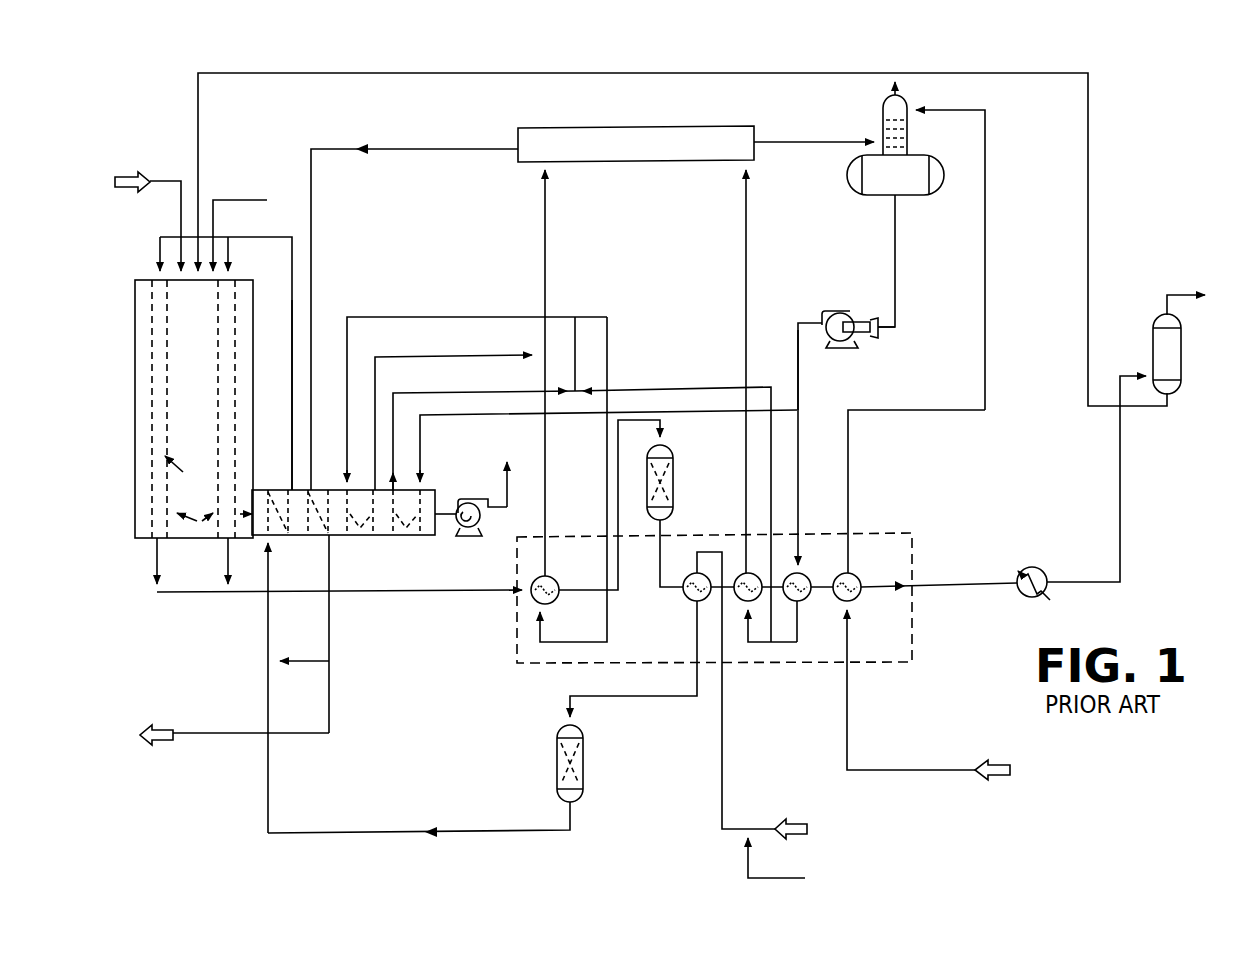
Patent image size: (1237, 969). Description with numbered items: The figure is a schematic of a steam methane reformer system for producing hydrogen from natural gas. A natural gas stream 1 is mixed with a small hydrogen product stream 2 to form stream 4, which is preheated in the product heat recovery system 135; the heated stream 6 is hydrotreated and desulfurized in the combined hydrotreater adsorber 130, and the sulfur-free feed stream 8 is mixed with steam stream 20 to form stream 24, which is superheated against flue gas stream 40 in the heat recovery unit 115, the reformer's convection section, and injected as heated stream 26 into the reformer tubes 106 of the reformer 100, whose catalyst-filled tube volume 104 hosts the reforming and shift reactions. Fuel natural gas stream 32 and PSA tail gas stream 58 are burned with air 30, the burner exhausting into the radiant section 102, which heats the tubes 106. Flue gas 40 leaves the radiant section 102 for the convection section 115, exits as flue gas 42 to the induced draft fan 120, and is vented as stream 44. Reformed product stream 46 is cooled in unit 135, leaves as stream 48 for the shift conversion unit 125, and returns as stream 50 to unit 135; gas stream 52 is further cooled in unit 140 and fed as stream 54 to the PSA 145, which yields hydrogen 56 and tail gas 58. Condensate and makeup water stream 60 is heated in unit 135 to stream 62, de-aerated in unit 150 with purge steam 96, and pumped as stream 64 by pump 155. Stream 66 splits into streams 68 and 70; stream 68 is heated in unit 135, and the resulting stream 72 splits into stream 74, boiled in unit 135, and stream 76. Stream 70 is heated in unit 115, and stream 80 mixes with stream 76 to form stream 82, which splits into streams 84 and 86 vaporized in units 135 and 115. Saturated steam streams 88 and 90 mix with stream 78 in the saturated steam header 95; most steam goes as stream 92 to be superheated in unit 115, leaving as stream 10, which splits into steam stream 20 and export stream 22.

The natural gas stream 1 is at (758, 828).
The hydrogen product stream 2 is at (756, 870).
The mixed feed stream 4 is at (722, 764).
The heated feed stream 6 is at (622, 696).
The sulfur-free feed stream 8 is at (462, 832).
The superheated steam stream 10 is at (329, 630).
The steam stream 20 is at (300, 664).
The export steam stream 22 is at (330, 718).
The natural gas-steam mixture stream 24 is at (268, 600).
The heated reformer feed stream 26 is at (290, 446).
The air 30 is at (231, 200).
The additional natural gas stream 32 is at (153, 181).
The flue gas stream 40 is at (238, 503).
The flue gas leaving convection section 42 is at (452, 512).
The flue gas stack stream 44 is at (502, 470).
The product stream 46 is at (408, 592).
The hot syngas stream 48 is at (618, 474).
The shift reactor outlet stream 50 is at (661, 574).
The cooled process gas stream 52 is at (940, 586).
The PSA feed stream 54 is at (1068, 584).
The hydrogen product 56 is at (1192, 268).
The PSA tail gas stream 58 is at (1088, 343).
The condensate and makeup boiler feedwater stream 60 is at (900, 770).
The heated boiler feedwater stream 62 is at (848, 476).
The de-aerated boiler feed water stream 64 is at (895, 285).
The pumped boiler feedwater stream 66 is at (798, 370).
The feedwater stream to heat recovery system 68 is at (798, 460).
The feedwater stream to convection section 70 is at (700, 413).
The heated feedwater stream 72 is at (798, 616).
The boiler feedwater stream 74 is at (745, 640).
The feedwater stream 76 is at (705, 389).
The steam stream to header 78 is at (746, 276).
The heated feedwater from convection section 80 is at (458, 393).
The combined feedwater stream 82 is at (575, 380).
The feedwater stream to heat recovery system 84 is at (607, 332).
The feedwater stream to convection section 86 is at (478, 317).
The saturated steam stream from convection section 88 is at (432, 357).
The saturated steam stream from heat recovery system 90 is at (545, 494).
The steam to superheater 92 is at (311, 306).
The saturated steam header 95 is at (645, 127).
The deaerator purge steam 96 is at (795, 150).
The reformer 100 is at (192, 540).
The radiant section 102 is at (181, 346).
The reformer tube internal volume 104 is at (196, 470).
The reformer tubes 106 is at (197, 523).
The heat recovery unit (convection section) 115 is at (362, 537).
The induced draft fan 120 is at (466, 538).
The shift conversion unit 125 is at (675, 480).
The combined hydrotreater adsorber 130 is at (584, 772).
The product heat recovery system 135 is at (846, 660).
The cooler 140 is at (1033, 566).
The PSA unit 145 is at (1183, 365).
The de-aerator 150 is at (887, 187).
The boiler feedwater pump 155 is at (835, 311).